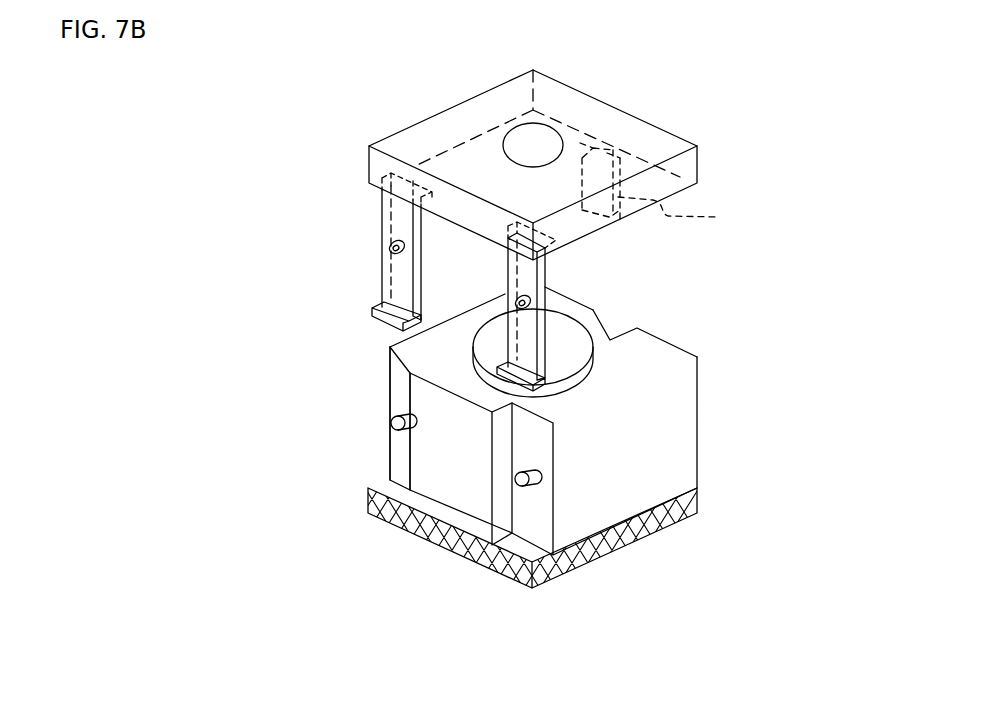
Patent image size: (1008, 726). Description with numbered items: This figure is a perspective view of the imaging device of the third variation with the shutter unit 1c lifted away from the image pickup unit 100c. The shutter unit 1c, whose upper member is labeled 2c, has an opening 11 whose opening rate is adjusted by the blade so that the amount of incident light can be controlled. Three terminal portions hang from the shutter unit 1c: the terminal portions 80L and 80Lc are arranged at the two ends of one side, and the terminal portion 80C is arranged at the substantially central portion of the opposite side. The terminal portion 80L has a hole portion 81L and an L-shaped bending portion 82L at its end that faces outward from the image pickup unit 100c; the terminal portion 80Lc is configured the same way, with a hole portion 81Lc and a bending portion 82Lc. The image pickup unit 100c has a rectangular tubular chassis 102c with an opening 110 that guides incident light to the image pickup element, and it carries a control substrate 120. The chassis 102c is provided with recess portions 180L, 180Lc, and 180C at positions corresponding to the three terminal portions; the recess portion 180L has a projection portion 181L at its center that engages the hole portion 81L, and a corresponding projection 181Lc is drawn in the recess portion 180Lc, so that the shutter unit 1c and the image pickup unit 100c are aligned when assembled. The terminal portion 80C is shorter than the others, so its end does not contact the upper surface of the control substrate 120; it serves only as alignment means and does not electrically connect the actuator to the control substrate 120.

The shutter unit 1c is at (653, 117).
The top plate 2c is at (443, 130).
The opening 11 is at (540, 140).
The terminal portion 80C is at (675, 186).
The terminal portion 80Lc is at (397, 290).
The hole portion 81Lc is at (392, 245).
The bending portion 82Lc is at (378, 318).
The terminal portion 80L is at (533, 337).
The hole portion 81L is at (527, 296).
The bending portion 82L is at (500, 372).
The image pickup unit 100c is at (707, 430).
The recess portion 180C is at (616, 326).
The recess portion 180Lc is at (400, 455).
The left pin 181Lc is at (393, 420).
The recess portion 180L is at (538, 513).
The projection portion 181L is at (517, 480).
The chassis 102c is at (682, 458).
The opening 110 is at (553, 343).
The control substrate 120 is at (410, 517).